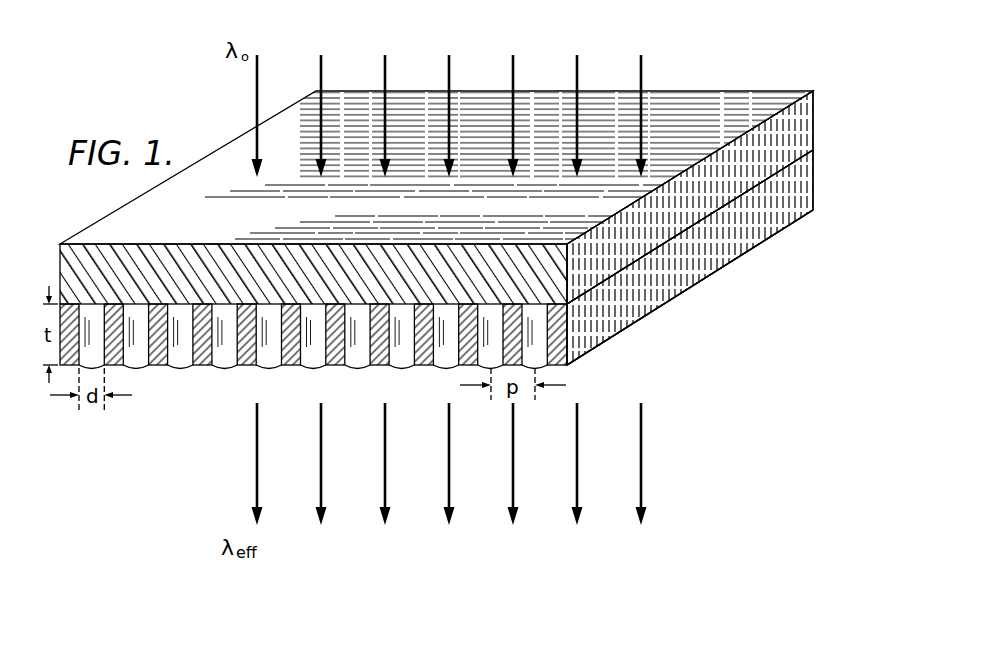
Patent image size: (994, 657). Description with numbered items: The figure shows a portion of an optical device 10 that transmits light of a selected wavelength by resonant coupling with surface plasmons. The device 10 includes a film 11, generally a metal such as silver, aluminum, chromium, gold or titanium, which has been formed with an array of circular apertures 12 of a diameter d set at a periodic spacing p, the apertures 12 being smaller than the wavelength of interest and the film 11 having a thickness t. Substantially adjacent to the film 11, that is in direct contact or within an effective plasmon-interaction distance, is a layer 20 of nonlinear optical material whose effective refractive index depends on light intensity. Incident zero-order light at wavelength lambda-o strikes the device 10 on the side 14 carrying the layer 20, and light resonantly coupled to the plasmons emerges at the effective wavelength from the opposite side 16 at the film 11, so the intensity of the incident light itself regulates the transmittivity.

The optical device 10 is at (761, 52).
The film 11 is at (610, 310).
The apertures 12 is at (142, 356).
The side 14 is at (760, 110).
The side 16 is at (593, 350).
The layer 20 is at (587, 267).